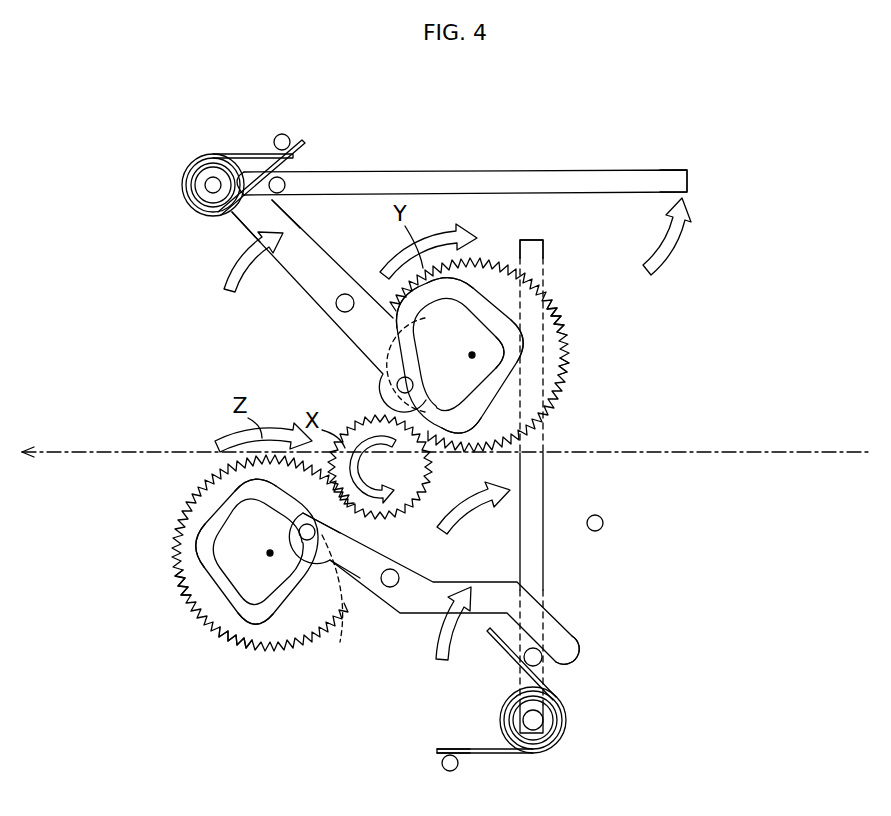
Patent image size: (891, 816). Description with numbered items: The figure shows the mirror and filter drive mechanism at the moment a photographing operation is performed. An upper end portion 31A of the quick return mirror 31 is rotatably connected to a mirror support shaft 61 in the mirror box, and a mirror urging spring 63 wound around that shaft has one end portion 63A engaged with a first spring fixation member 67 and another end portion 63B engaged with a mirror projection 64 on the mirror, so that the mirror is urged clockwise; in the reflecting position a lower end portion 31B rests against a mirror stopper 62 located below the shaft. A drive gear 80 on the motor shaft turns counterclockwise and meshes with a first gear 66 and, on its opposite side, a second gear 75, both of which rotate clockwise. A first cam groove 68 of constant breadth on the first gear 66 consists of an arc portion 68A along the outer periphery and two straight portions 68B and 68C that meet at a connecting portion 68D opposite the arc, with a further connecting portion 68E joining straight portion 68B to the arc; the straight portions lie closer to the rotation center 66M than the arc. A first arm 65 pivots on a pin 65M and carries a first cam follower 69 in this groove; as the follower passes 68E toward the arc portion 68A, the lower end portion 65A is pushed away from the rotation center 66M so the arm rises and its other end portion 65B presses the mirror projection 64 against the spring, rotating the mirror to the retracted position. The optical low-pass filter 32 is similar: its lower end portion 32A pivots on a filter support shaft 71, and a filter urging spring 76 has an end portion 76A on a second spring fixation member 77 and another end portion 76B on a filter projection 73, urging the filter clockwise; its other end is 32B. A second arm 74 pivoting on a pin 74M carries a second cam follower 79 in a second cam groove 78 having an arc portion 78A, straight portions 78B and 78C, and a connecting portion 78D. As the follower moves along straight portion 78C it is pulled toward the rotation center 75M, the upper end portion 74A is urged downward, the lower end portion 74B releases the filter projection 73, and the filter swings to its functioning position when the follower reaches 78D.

The quick return mirror 31 is at (480, 170).
The upper end portion 31A is at (215, 155).
The lower end portion 31B is at (655, 170).
The optical low-pass filter 32 is at (546, 576).
The lower end portion 32A is at (568, 718).
The second arm end portion 32B is at (546, 248).
The mirror support shaft 61 is at (205, 193).
The mirror stopper 62 is at (604, 524).
The mirror urging spring 63 is at (182, 186).
The end portion of mirror urging spring 63A is at (262, 153).
The other end portion of mirror urging spring 63B is at (308, 143).
The mirror projection 64 is at (286, 191).
The first arm 65 is at (288, 273).
The lower end portion of first arm 65A is at (385, 366).
The other end portion of first arm 65B is at (240, 218).
The pin 65M is at (336, 308).
The first gear 66 is at (569, 328).
The rotation center of first gear 66M is at (562, 370).
The first spring fixation member 67 is at (283, 133).
The first cam groove 68 is at (550, 405).
The arc portion 68A is at (395, 300).
The straight portion 68B is at (560, 306).
The straight portion 68C is at (552, 425).
The connecting portion 68D is at (565, 351).
The connecting portion 68E is at (475, 270).
The first cam follower 69 is at (397, 386).
The filter support shaft 71 is at (560, 745).
The filter projection 73 is at (545, 660).
The second arm 74 is at (440, 615).
The upper end portion of second arm 74A is at (345, 540).
The lower end portion of second arm 74B is at (572, 646).
The pin 74M is at (390, 588).
The second gear 75 is at (232, 651).
The rotation center of second gear 75M is at (188, 600).
The filter urging spring 76 is at (475, 755).
The end portion of filter urging spring 76A is at (455, 748).
The other end portion of filter urging spring 76B is at (496, 640).
The second spring fixation member 77 is at (443, 768).
The second cam groove 78 is at (218, 630).
The arc portion 78A is at (178, 550).
The straight portion 78B is at (210, 486).
The straight portion 78C is at (290, 640).
The connecting portion 78D is at (332, 634).
The second cam follower 79 is at (318, 536).
The drive gear 80 is at (432, 470).